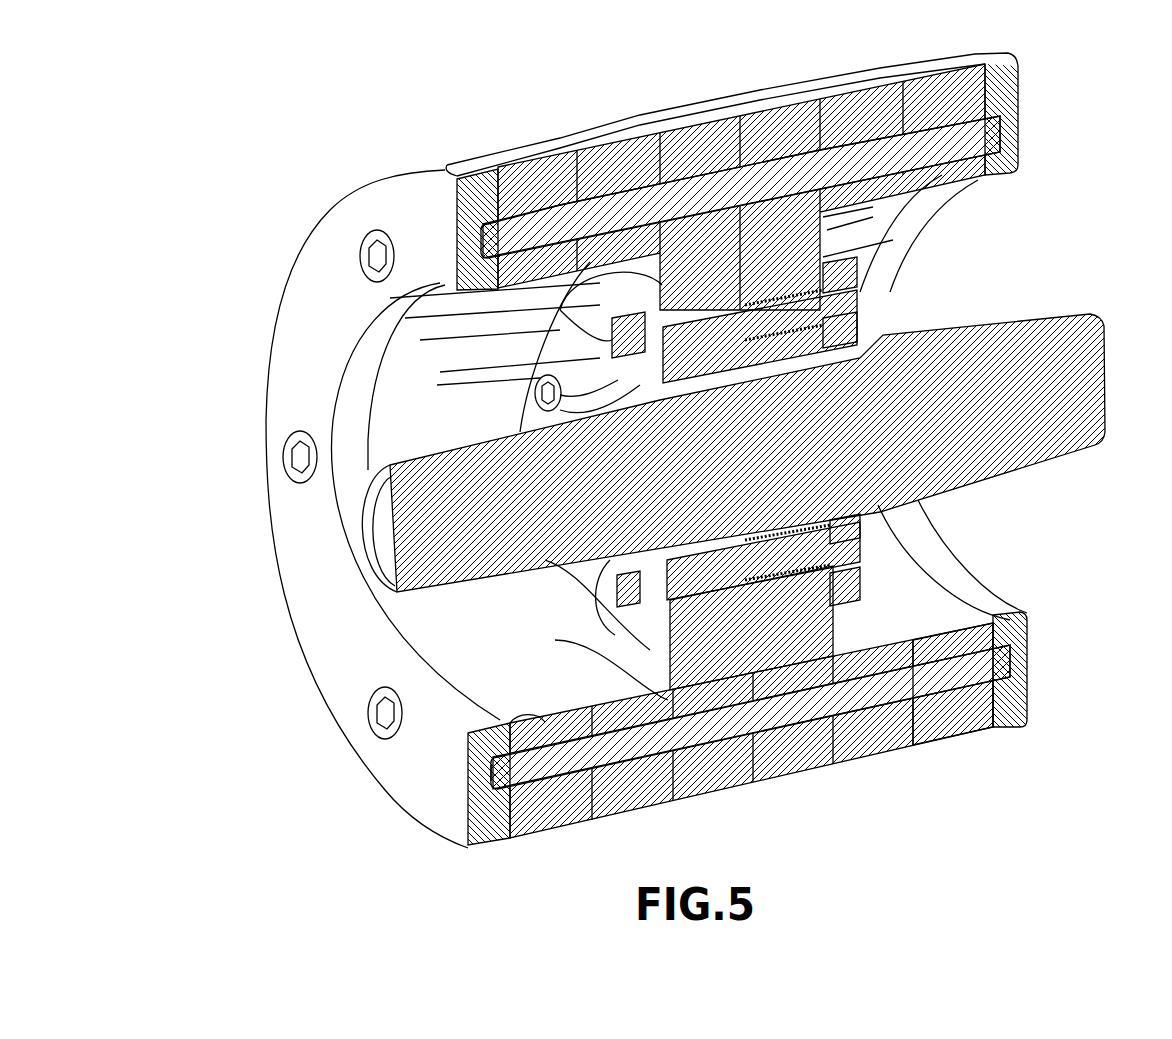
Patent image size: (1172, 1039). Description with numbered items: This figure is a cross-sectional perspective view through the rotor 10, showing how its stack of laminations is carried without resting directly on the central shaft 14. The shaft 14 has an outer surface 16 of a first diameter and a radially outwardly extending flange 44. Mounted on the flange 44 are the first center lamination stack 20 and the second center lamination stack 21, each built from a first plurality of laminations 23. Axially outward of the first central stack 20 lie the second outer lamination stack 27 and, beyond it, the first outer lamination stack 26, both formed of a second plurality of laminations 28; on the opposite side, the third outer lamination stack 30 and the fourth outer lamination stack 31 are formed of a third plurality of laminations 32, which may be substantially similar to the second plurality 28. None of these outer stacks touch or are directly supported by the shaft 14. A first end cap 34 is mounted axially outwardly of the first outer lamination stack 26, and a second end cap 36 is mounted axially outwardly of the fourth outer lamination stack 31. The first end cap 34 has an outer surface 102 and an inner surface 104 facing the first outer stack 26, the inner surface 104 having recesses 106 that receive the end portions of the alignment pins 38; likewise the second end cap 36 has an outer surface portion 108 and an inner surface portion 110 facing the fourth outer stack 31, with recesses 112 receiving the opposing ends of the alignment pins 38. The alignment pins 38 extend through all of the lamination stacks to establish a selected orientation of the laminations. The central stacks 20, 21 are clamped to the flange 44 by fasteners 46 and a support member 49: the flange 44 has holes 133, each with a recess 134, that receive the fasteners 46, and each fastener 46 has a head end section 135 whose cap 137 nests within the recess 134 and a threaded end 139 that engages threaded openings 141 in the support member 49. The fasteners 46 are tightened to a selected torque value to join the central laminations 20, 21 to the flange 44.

The rotor 10 is at (654, 471).
The central shaft 14 is at (1064, 480).
The outer surface 16 is at (808, 543).
The first center lamination stack 20 is at (686, 127).
The second center lamination stack 21 is at (766, 110).
The first plurality of laminations 23 is at (717, 128).
The first outer lamination stack 26 is at (531, 158).
The second outer lamination stack 27 is at (606, 145).
The second plurality of laminations 28 is at (478, 185).
The third outer lamination stack 30 is at (858, 98).
The fourth outer lamination stack 31 is at (931, 78).
The third plurality of laminations 32 is at (972, 97).
The first end cap 34 is at (282, 527).
The second end cap 36 is at (719, 453).
The alignment pins 38 is at (533, 792).
The flange 44 is at (622, 632).
The fasteners 46 is at (860, 302).
The support member 49 is at (845, 588).
The first or outer surface 102 is at (412, 784).
The second or inner surface 104 is at (527, 724).
The recesses 106 is at (500, 778).
The first or outer surface portion 108 is at (1028, 665).
The second or inner surface portion 110 is at (987, 738).
The recesses 112 is at (1003, 655).
The holes 133 is at (660, 335).
The recess 134 is at (620, 338).
The head end section 135 is at (618, 380).
The cap 137 is at (610, 352).
The threaded end 139 is at (845, 310).
The threaded openings 141 is at (830, 294).